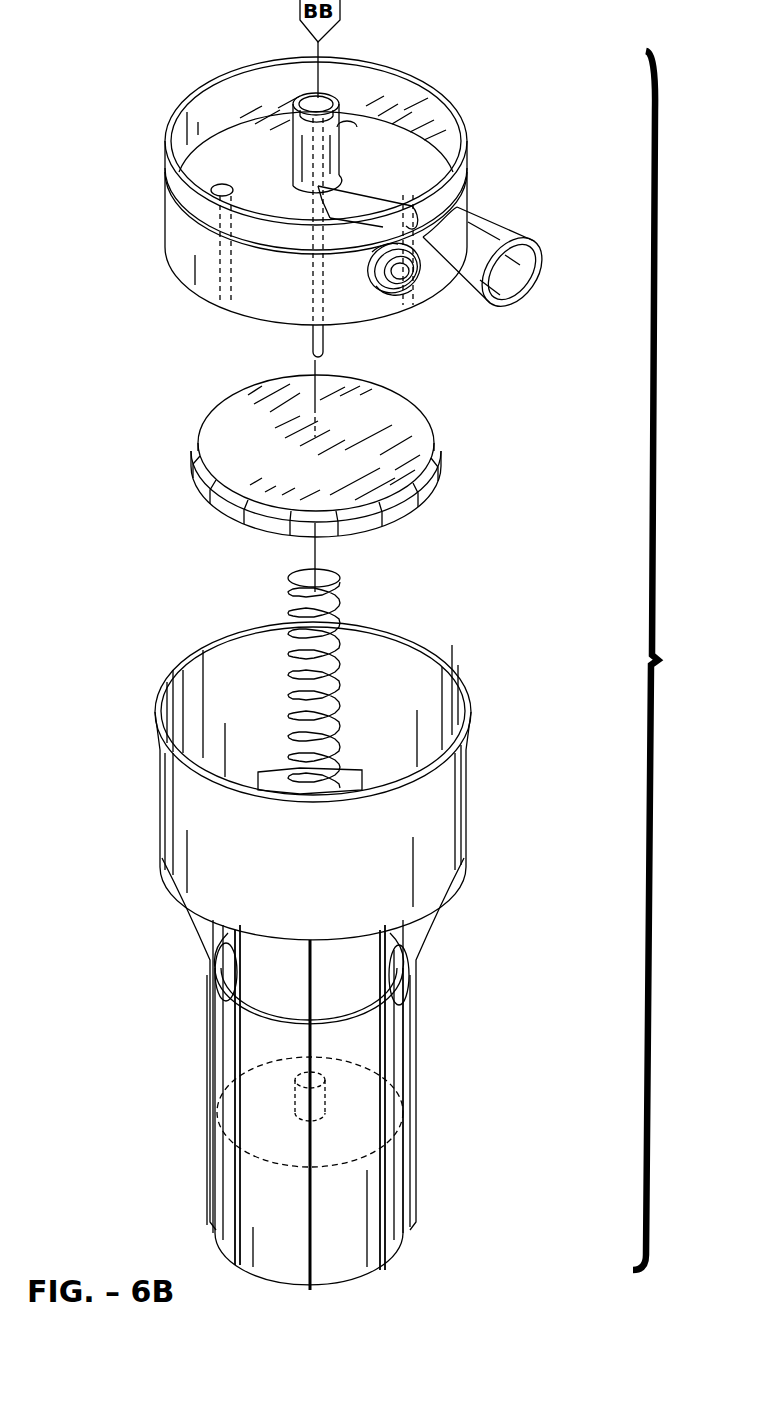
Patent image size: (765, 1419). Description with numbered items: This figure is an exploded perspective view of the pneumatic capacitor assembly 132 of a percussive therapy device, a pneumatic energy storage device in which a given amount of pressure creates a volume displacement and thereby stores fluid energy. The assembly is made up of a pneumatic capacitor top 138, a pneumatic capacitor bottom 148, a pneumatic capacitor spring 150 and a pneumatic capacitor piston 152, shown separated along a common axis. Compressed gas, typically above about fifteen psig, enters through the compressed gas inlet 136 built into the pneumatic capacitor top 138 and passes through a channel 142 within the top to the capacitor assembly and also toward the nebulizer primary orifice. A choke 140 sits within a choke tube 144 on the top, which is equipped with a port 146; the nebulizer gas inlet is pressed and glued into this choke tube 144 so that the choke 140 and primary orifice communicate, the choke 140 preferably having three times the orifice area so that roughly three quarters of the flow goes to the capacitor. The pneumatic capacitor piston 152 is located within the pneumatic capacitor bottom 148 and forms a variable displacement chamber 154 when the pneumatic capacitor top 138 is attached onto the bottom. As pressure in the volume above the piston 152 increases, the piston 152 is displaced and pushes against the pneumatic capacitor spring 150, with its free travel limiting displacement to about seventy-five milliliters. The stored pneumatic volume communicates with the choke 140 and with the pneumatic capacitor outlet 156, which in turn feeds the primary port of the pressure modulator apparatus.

The pneumatic capacitor assembly 132 is at (673, 660).
The compressed gas inlet 136 is at (392, 292).
The pneumatic capacitor top 138 is at (470, 200).
The choke 140 is at (318, 110).
The channel 142 is at (350, 190).
The choke tube 144 is at (293, 151).
The port 146 is at (306, 100).
The pneumatic capacitor bottom 148 is at (470, 808).
The pneumatic capacitor spring 150 is at (340, 586).
The pneumatic capacitor piston 152 is at (415, 420).
The variable displacement chamber 154 is at (198, 697).
The pneumatic capacitor outlet 156 is at (534, 241).